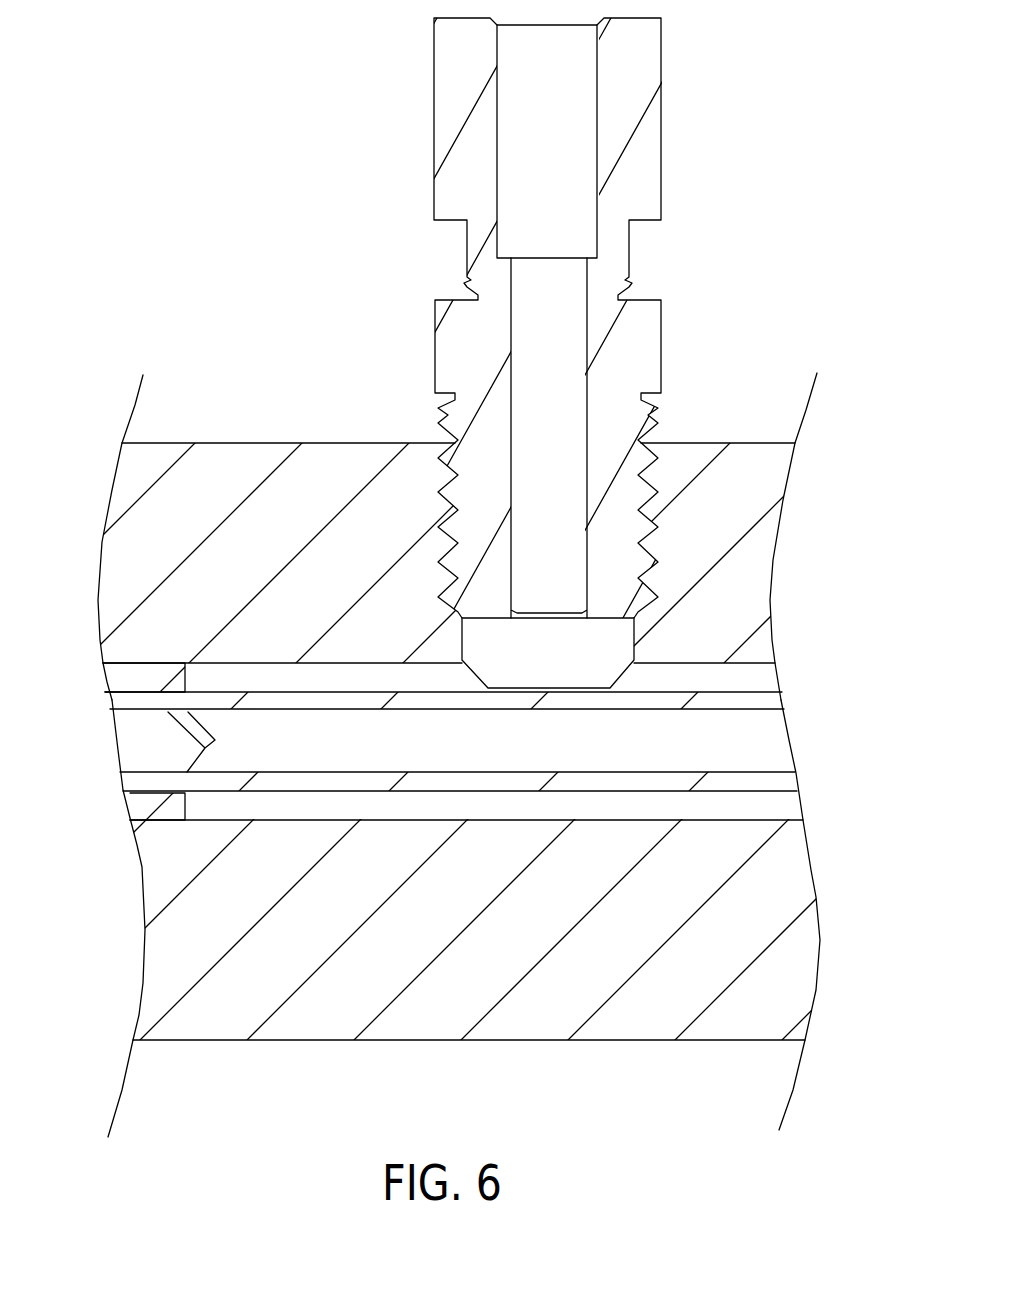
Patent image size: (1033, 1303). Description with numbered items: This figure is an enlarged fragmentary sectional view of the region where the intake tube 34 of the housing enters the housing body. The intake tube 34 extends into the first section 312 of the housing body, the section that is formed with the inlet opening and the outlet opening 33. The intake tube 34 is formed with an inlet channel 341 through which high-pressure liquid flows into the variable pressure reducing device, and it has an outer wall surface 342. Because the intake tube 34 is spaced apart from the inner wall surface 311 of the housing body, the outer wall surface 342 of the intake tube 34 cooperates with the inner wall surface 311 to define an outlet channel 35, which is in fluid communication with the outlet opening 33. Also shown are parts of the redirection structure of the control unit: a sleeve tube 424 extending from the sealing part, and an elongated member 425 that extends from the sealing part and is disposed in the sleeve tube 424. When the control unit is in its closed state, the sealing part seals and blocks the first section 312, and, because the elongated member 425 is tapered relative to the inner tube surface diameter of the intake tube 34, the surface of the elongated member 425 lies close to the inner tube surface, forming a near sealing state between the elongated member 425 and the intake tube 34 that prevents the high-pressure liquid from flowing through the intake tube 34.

The outlet opening 33 is at (575, 77).
The inner wall surface 311 is at (268, 663).
The first section 312 is at (300, 1033).
The outlet channel 35 is at (695, 673).
The intake tube 34 is at (507, 780).
The inlet channel 341 is at (666, 758).
The outer wall surface 342 is at (602, 792).
The sleeve tube 424 is at (115, 680).
The elongated member 425 is at (132, 744).